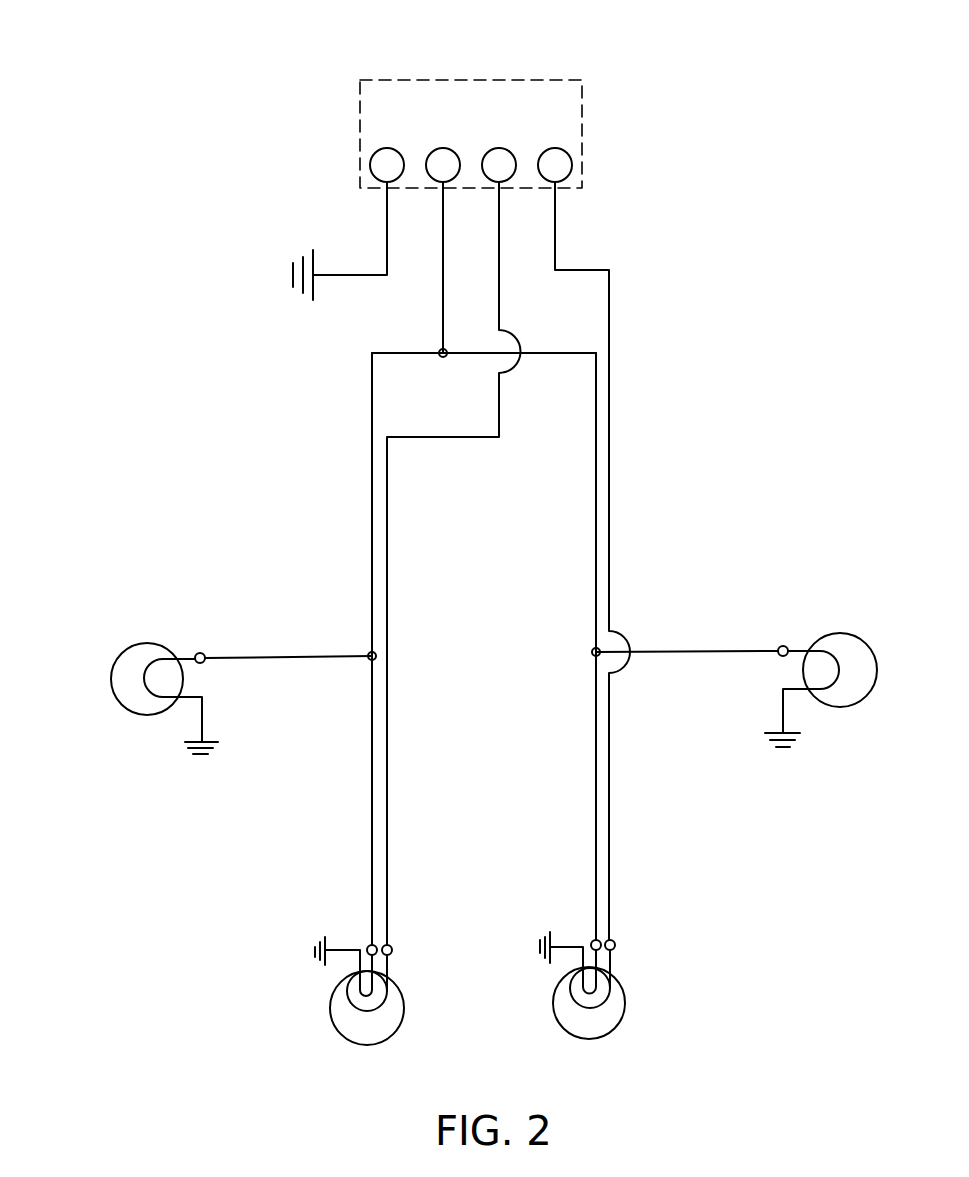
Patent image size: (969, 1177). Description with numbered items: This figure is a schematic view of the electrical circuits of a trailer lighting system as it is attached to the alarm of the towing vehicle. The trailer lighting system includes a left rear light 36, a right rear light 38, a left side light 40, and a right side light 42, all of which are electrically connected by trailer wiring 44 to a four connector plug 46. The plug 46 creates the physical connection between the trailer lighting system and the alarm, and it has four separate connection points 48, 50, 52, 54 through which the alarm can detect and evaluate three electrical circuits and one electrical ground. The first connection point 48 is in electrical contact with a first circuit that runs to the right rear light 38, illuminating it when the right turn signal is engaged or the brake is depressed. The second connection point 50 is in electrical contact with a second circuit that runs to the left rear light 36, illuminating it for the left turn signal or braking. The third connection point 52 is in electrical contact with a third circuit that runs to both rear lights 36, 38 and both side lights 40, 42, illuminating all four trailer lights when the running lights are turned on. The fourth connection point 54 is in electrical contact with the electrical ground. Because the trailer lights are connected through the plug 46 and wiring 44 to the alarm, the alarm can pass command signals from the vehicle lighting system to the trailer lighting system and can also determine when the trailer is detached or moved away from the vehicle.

The left rear light 36 is at (353, 1022).
The right rear light 38 is at (615, 1005).
The left side light 40 is at (120, 685).
The right side light 42 is at (866, 662).
The trailer wiring 44 is at (596, 382).
The four connector plug 46 is at (572, 88).
The first connection point 48 is at (572, 162).
The second connection point 50 is at (500, 148).
The third connection point 52 is at (432, 152).
The fourth connection point 54 is at (370, 165).